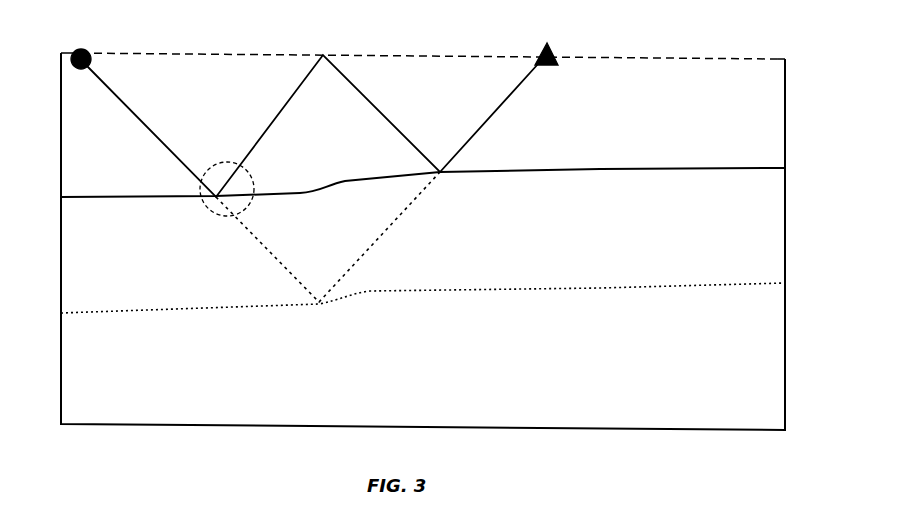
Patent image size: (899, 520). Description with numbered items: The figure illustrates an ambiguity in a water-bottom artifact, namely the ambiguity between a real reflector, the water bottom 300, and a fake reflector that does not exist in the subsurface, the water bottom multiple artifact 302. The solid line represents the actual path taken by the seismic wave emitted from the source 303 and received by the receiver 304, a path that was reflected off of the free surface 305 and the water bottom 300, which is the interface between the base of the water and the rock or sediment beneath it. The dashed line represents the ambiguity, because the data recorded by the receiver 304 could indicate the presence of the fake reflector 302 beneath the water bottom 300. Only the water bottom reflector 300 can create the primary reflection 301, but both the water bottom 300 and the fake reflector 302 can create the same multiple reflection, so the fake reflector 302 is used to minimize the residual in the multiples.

The water bottom 300 is at (623, 168).
The primary reflection 301 is at (229, 162).
The water bottom multiple artifact 302 is at (622, 283).
The source 303 is at (73, 51).
The receiver 304 is at (552, 45).
The free surface 305 is at (251, 53).